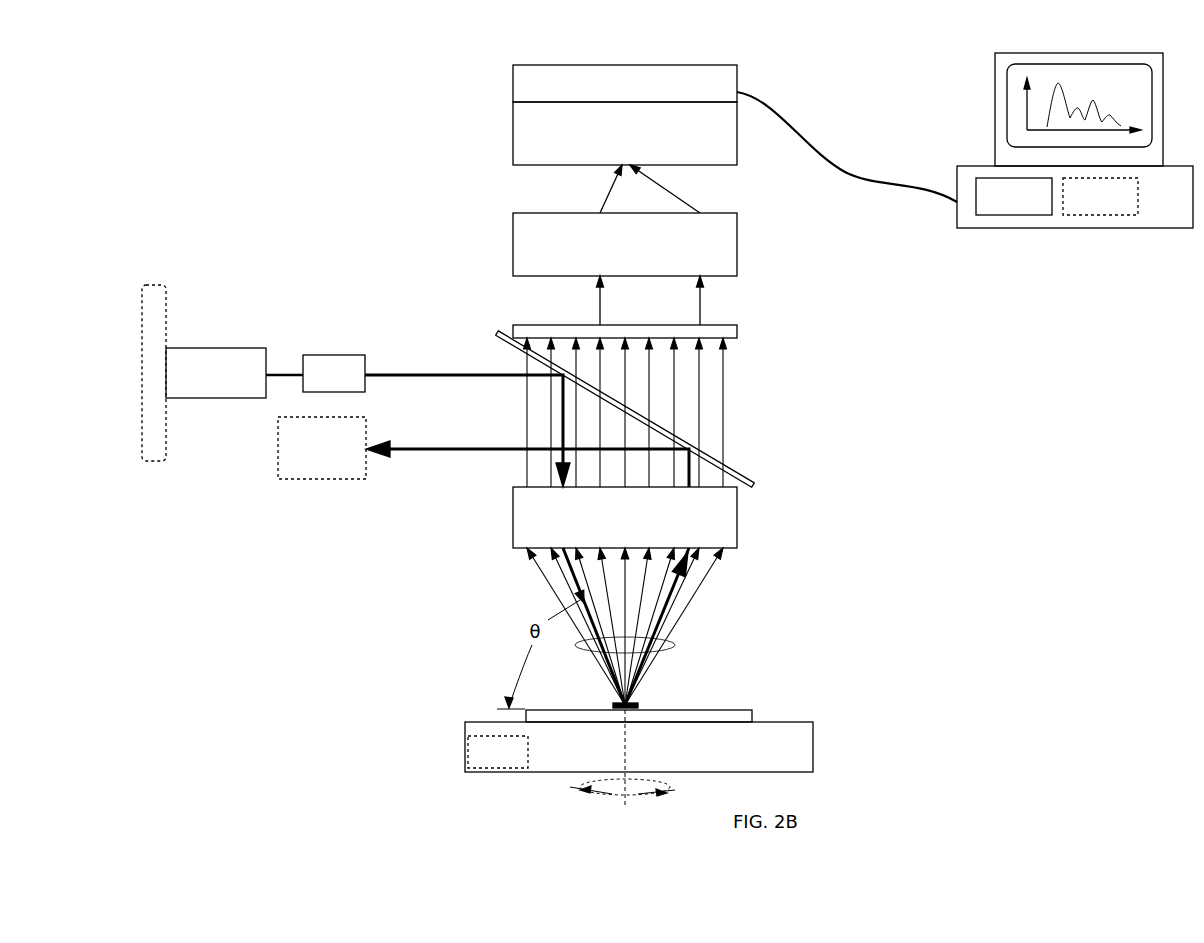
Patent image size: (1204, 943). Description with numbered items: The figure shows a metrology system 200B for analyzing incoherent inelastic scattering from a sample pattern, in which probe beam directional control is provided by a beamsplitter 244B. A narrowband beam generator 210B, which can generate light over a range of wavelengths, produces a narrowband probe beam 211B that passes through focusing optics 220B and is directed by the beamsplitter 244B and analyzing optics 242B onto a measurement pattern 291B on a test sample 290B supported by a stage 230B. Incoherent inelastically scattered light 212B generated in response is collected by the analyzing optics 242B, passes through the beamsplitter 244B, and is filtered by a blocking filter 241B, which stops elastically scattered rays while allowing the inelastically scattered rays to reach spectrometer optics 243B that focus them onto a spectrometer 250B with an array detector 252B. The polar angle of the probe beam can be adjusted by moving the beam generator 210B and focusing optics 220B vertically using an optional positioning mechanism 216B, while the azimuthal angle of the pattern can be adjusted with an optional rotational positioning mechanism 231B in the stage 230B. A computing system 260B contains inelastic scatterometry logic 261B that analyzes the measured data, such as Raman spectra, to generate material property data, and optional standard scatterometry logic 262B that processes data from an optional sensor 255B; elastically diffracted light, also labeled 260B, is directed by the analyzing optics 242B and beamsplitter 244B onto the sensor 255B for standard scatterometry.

The metrology system 200B is at (236, 201).
The narrowband beam generator 210B is at (234, 373).
The narrowband probe beam 211B is at (580, 597).
The incoherent inelastically scattered light 212B is at (578, 647).
The positioning mechanism 216B is at (150, 463).
The focusing optics 220B is at (334, 373).
The stage 230B is at (639, 759).
The rotational positioning mechanism 231B is at (498, 752).
The blocking filter 241B is at (738, 332).
The analyzing optics 242B is at (625, 517).
The spectrometer optics 243B is at (625, 220).
The beamsplitter 244B is at (750, 476).
The spectrometer 250B is at (625, 133).
The array detector 252B is at (625, 83).
The sensor 255B is at (322, 448).
The computing system 260B is at (995, 130).
The inelastic scatterometry logic 261B is at (1022, 215).
The standard scatterometry logic 262B is at (1093, 215).
The test sample 290B is at (468, 716).
The measurement pattern 291B is at (635, 703).